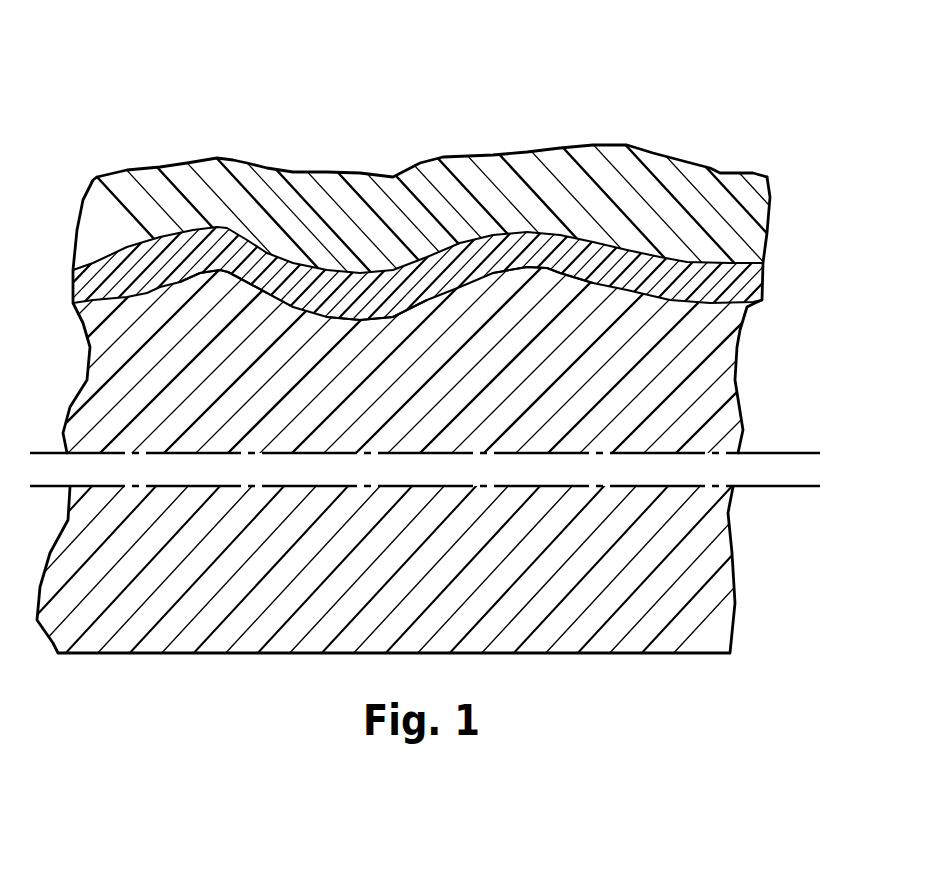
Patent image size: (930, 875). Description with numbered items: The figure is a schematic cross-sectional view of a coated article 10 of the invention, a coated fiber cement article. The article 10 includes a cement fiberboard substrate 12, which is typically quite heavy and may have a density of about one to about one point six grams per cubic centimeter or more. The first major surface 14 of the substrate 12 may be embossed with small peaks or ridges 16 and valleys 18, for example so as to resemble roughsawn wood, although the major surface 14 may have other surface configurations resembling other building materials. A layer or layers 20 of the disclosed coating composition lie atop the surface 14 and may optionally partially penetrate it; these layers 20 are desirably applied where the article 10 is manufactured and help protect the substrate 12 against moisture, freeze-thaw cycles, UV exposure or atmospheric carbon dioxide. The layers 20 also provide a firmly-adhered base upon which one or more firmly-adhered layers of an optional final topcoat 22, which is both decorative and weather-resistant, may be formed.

The coated article 10 is at (538, 104).
The cement fiberboard substrate 12 is at (715, 400).
The first major surface 14 is at (707, 310).
The peaks or ridges 16 is at (228, 274).
The valleys 18 is at (407, 318).
The layer or layers of coating composition 20 is at (747, 293).
The final topcoat 22 is at (752, 235).